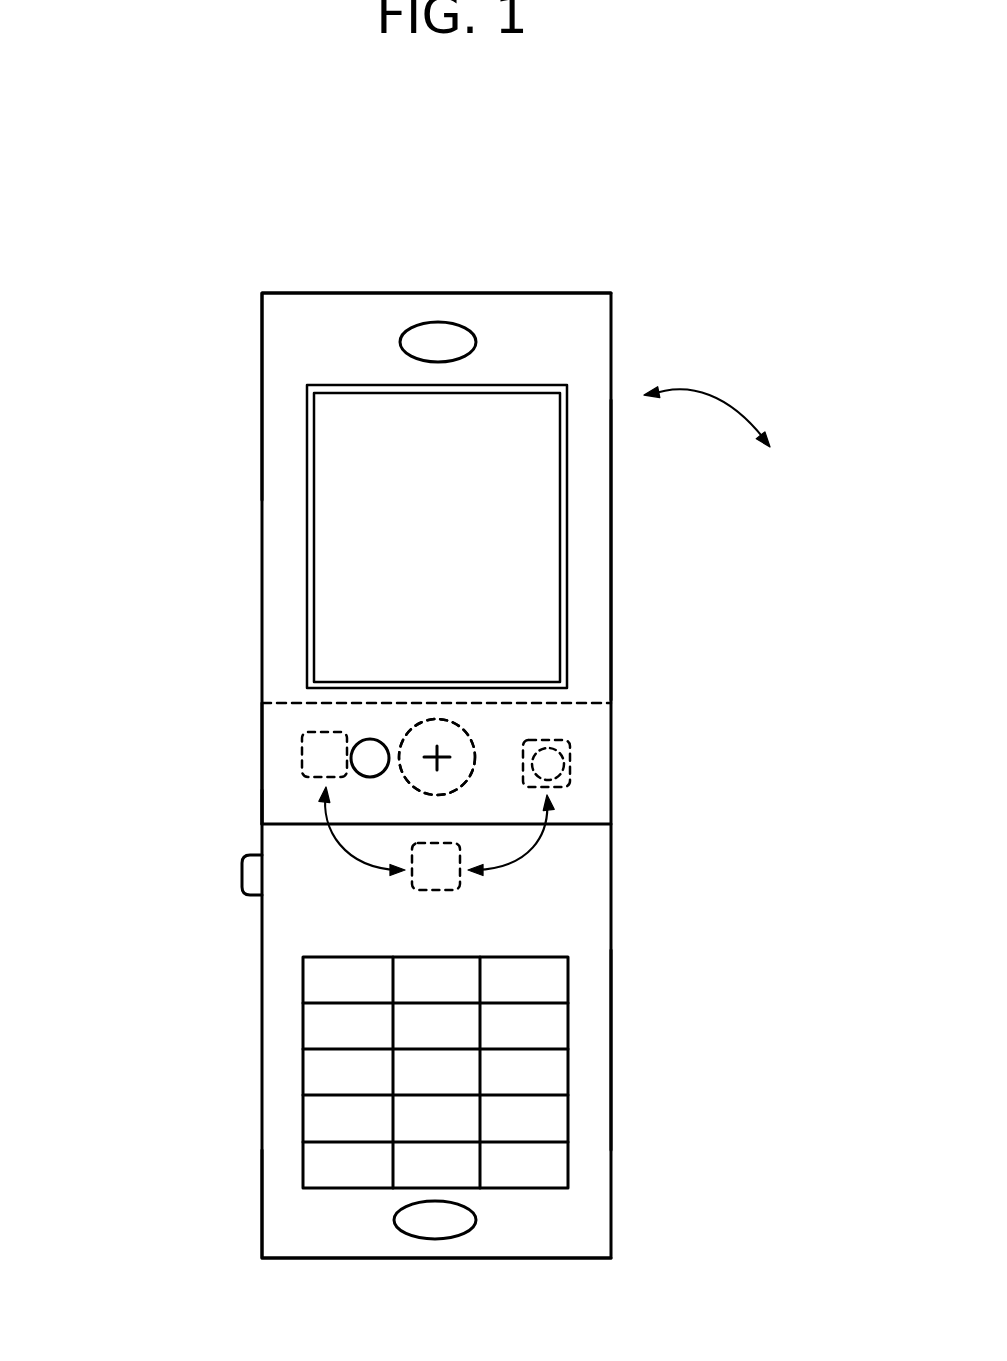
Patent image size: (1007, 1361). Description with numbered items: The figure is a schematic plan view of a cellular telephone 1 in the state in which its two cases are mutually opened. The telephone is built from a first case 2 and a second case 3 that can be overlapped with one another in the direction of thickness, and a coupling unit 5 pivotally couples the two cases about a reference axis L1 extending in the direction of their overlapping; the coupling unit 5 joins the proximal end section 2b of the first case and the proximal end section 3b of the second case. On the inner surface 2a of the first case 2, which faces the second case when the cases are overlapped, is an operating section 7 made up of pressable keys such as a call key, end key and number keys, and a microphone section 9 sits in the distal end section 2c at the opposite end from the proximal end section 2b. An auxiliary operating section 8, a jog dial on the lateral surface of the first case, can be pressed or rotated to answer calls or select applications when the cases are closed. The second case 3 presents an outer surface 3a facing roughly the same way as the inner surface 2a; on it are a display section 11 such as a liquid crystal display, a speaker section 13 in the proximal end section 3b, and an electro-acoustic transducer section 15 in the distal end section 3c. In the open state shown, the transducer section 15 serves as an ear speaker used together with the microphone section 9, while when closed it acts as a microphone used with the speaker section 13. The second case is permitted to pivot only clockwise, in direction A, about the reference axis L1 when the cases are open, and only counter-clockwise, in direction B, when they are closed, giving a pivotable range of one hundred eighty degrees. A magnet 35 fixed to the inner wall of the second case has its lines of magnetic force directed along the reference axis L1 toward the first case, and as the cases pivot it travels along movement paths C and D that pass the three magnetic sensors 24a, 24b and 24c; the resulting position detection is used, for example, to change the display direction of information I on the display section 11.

The cellular telephone 1 is at (670, 250).
The first case 2 is at (260, 1030).
The inner surface 2a is at (598, 1068).
The proximal end section 2b is at (282, 798).
The distal end section 2c is at (276, 1238).
The second case 3 is at (258, 563).
The outer surface 3a is at (597, 555).
The proximal end section 3b is at (273, 725).
The distal end section 3c is at (292, 333).
The coupling unit 5 is at (396, 717).
The operating section 7 is at (290, 1045).
The auxiliary operating section 8 is at (248, 875).
The microphone section 9 is at (392, 1250).
The display section 11 is at (337, 465).
The speaker section 13 is at (352, 728).
The electro-acoustic transducer section 15 is at (452, 312).
The magnetic sensor 24a is at (570, 772).
The magnetic sensor 24b is at (462, 886).
The magnetic sensor 24c is at (302, 758).
The magnet 35 is at (562, 790).
The reference axis L1 is at (445, 752).
The direction A is at (722, 418).
The direction B is at (648, 373).
The movement path C is at (347, 853).
The movement path D is at (530, 858).
The information I is at (488, 527).